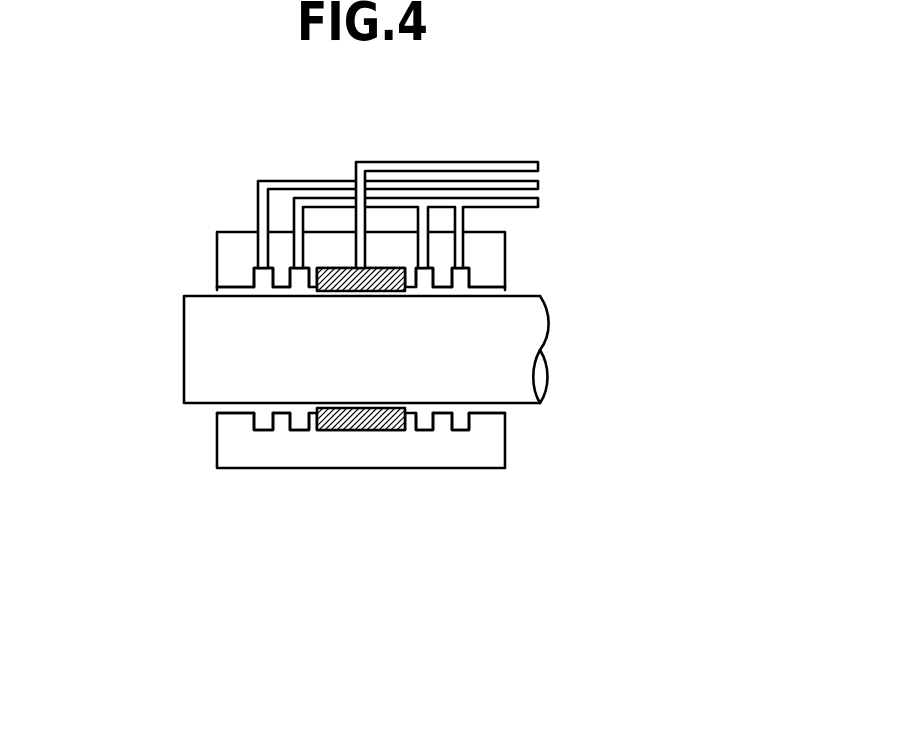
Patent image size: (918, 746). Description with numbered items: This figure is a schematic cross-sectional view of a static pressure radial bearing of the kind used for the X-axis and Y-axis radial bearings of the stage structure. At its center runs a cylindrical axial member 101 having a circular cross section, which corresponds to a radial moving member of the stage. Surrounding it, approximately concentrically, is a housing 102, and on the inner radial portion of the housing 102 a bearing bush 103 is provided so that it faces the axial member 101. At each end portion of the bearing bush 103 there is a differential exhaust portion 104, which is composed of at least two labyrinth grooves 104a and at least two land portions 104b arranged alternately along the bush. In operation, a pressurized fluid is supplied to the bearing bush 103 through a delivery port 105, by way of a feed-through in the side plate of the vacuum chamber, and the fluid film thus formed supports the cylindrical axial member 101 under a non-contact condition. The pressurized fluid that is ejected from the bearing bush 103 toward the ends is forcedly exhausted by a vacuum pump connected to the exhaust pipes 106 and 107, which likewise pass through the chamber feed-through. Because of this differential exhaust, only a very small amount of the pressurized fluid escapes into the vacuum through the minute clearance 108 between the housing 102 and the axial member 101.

The cylindrical axial member 101 is at (512, 318).
The housing 102 is at (239, 243).
The bearing bush 103 is at (338, 265).
The differential exhaust portion 104 is at (163, 679).
The labyrinth grooves 104a is at (260, 423).
The land portions 104b is at (232, 413).
The delivery port 105 is at (415, 165).
The exhaust pipe 106 is at (533, 202).
The exhaust pipe 107 is at (495, 185).
The minute clearance 108 is at (208, 288).